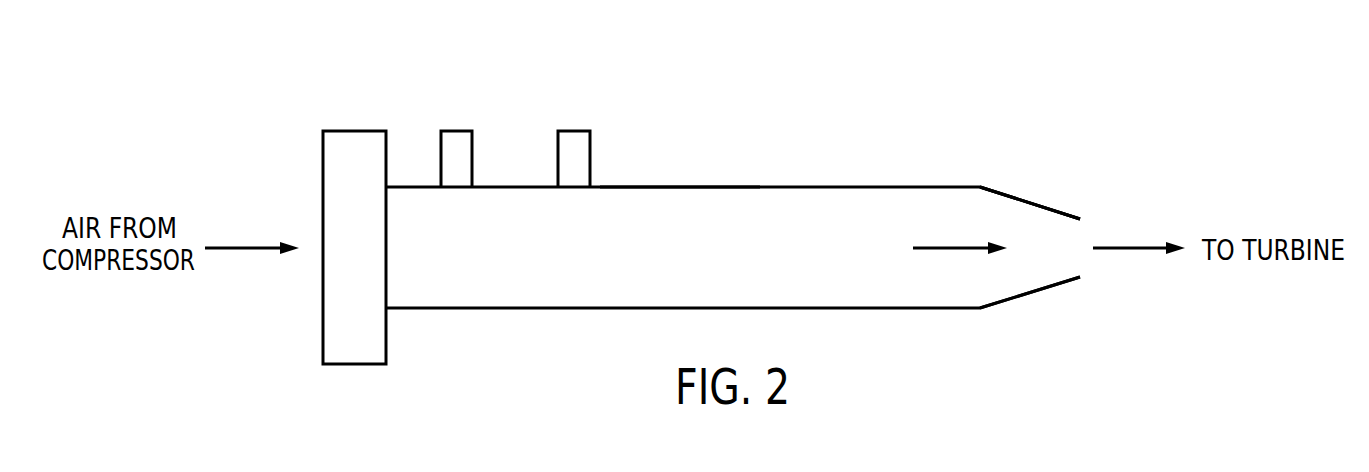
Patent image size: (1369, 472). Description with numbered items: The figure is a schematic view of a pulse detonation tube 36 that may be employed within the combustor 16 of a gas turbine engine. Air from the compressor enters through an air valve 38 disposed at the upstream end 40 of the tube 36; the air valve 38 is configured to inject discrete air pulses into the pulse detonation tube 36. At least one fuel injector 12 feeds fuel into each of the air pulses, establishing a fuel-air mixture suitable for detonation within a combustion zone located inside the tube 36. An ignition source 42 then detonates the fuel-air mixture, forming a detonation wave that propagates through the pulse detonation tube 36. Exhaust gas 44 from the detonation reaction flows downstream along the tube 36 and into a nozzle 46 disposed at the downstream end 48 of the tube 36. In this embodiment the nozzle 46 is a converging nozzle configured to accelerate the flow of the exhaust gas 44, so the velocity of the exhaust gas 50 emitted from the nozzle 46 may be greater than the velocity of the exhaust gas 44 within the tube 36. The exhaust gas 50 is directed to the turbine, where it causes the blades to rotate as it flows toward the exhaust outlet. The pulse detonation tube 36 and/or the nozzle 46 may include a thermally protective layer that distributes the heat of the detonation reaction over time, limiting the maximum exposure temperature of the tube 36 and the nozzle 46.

The combustor 16 is at (680, 74).
The air valve 38 is at (357, 131).
The upstream end 40 is at (411, 141).
The fuel injector 12 is at (457, 131).
The ignition source 42 is at (575, 131).
The pulse detonation tube 36 is at (682, 187).
The exhaust gas 44 is at (953, 247).
The downstream end 48 is at (961, 135).
The nozzle 46 is at (1032, 203).
The exhaust gas 50 is at (1137, 247).